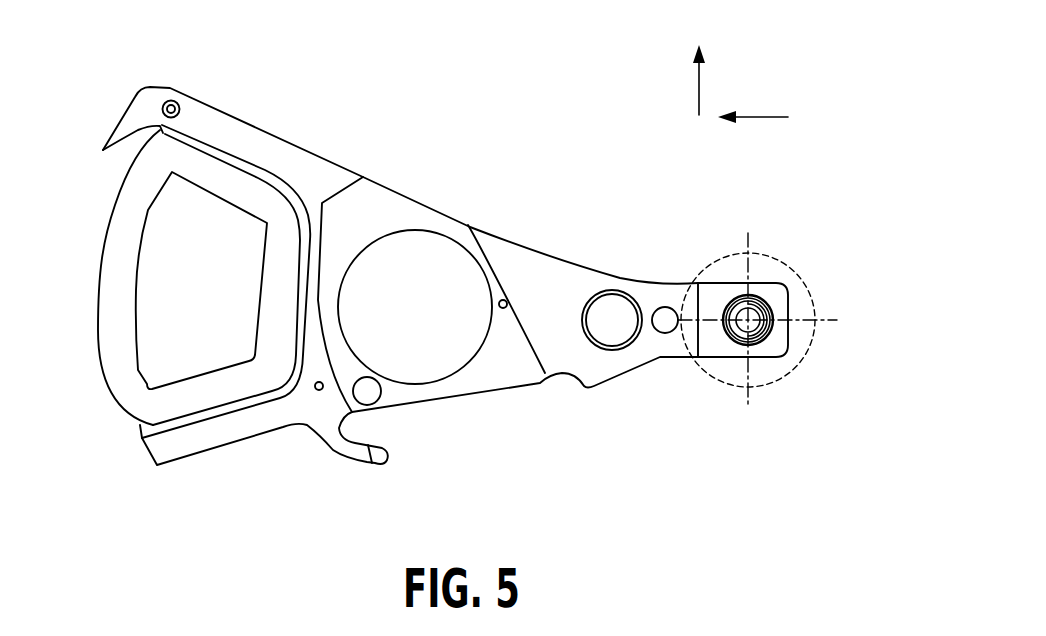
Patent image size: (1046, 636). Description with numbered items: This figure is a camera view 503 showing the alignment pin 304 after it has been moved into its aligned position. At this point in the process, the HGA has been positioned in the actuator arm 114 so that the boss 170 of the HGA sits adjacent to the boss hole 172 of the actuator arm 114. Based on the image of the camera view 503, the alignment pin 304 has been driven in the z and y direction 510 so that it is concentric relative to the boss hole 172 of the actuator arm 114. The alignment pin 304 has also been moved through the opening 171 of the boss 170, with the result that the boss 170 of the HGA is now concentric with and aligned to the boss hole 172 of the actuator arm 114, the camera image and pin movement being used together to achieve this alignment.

The actuator arm 114 is at (530, 266).
The boss 170 is at (755, 348).
The alignment pin 304 is at (757, 300).
The boss hole 172 is at (733, 348).
The opening 171 is at (773, 327).
The camera view 503 is at (808, 282).
The z and y direction 510 is at (790, 58).